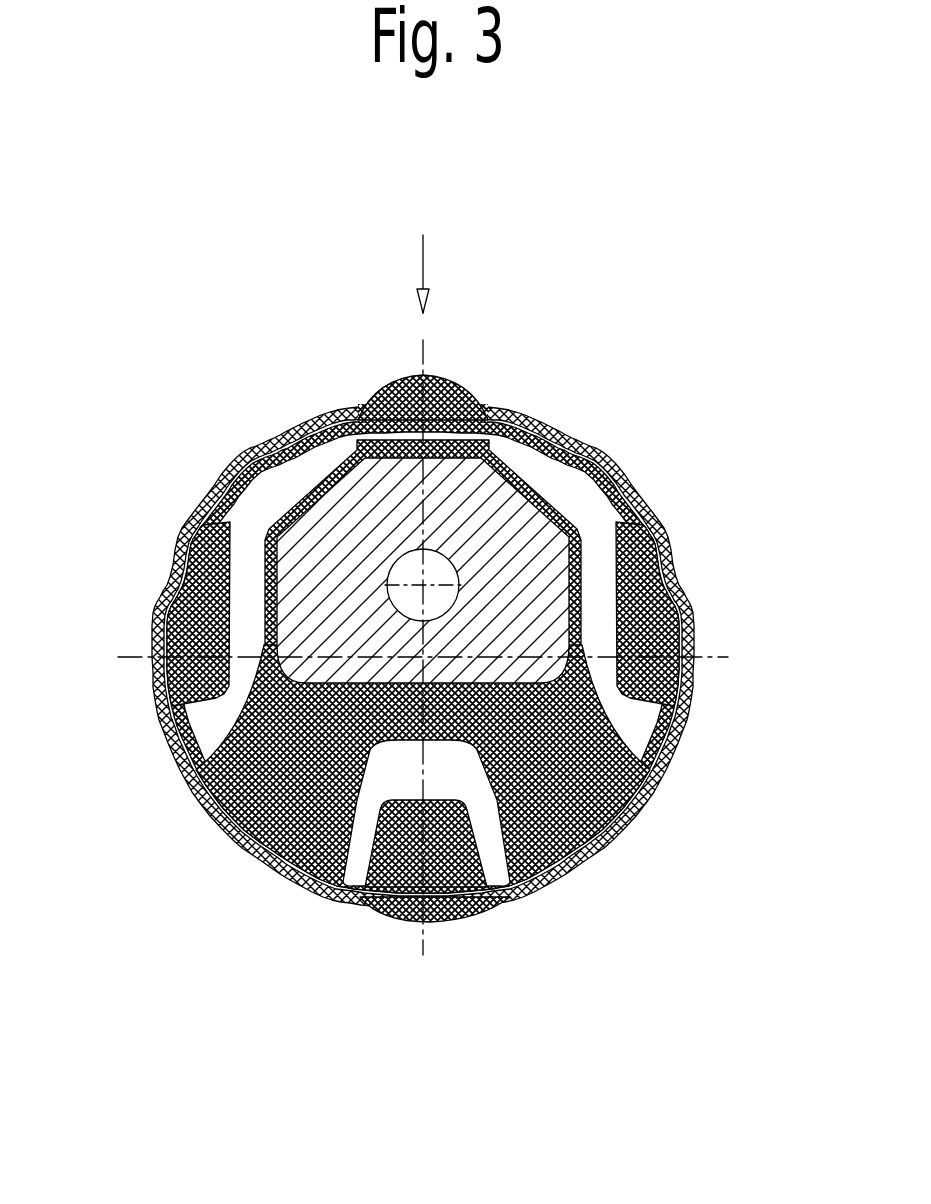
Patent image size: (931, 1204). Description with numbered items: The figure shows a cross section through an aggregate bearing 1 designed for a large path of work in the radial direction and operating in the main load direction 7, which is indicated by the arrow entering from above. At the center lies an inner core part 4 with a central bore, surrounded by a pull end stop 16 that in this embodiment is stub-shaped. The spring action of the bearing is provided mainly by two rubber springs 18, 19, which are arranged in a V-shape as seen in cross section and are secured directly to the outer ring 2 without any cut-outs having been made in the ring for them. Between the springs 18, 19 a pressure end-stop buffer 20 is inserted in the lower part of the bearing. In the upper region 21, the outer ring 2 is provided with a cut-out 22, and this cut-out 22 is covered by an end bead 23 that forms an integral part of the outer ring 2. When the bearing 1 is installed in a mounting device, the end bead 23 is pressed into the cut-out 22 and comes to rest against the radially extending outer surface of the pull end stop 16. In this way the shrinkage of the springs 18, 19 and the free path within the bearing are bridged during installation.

The aggregate bearing 1 is at (212, 460).
The outer ring 2 is at (583, 447).
The inner core part 4 is at (318, 548).
The main load direction 7 is at (418, 240).
The pull end stop 16 is at (458, 445).
The spring 18 is at (195, 805).
The spring 19 is at (633, 812).
The pressure end-stop buffer 20 is at (407, 853).
The region 21 is at (378, 363).
The cut-out 22 is at (363, 400).
The end bead 23 is at (448, 377).